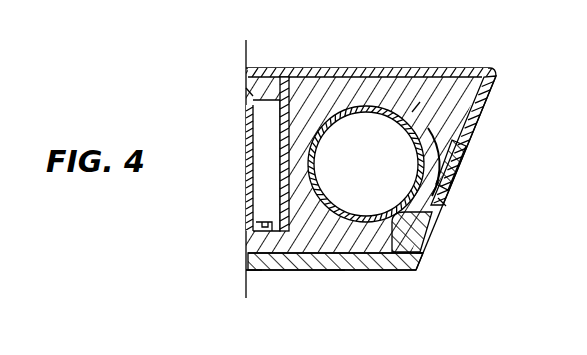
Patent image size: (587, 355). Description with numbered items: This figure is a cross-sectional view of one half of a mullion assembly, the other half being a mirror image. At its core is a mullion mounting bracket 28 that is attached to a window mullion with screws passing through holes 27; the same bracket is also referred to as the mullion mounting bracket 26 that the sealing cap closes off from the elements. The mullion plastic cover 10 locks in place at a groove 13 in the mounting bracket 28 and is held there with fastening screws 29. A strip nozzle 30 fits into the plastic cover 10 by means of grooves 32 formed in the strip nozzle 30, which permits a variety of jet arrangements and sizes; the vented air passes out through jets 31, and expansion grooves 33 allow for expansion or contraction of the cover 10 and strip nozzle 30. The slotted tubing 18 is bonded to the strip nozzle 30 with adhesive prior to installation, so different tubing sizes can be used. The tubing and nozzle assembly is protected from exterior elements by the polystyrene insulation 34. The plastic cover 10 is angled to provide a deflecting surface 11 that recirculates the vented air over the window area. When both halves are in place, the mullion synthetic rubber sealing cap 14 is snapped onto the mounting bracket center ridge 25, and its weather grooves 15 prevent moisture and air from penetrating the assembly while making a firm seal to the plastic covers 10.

The mullion plastic cover 10 is at (438, 67).
The deflecting surface 11 is at (496, 96).
The groove 13 is at (400, 272).
The mullion synthetic rubber sealing cap 14 is at (262, 66).
The weather grooves 15 is at (288, 74).
The slotted tubing 18 is at (340, 118).
The mounting bracket center ridge 25 is at (246, 94).
The mullion mounting bracket 26 is at (266, 272).
The holes 27 is at (333, 272).
The mullion mounting bracket 28 is at (368, 272).
The fastening screws 29 is at (258, 220).
The strip nozzle 30 is at (432, 226).
The jets 31 is at (440, 204).
The grooves 32 is at (412, 212).
The expansion grooves 33 is at (462, 156).
The polystyrene insulation 34 is at (434, 98).